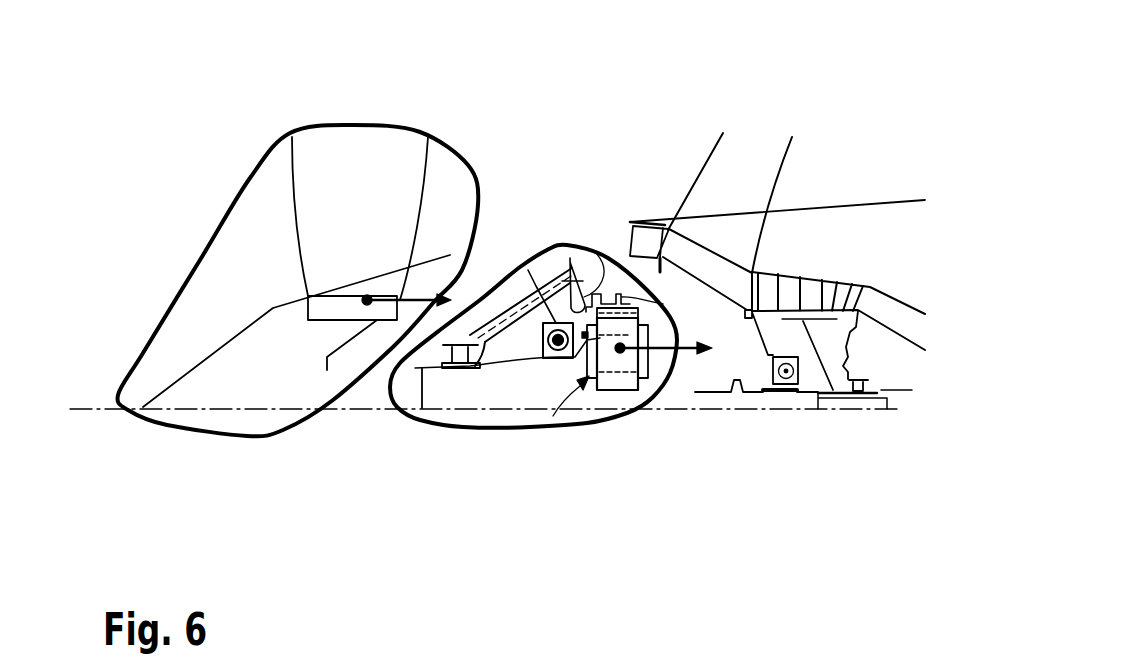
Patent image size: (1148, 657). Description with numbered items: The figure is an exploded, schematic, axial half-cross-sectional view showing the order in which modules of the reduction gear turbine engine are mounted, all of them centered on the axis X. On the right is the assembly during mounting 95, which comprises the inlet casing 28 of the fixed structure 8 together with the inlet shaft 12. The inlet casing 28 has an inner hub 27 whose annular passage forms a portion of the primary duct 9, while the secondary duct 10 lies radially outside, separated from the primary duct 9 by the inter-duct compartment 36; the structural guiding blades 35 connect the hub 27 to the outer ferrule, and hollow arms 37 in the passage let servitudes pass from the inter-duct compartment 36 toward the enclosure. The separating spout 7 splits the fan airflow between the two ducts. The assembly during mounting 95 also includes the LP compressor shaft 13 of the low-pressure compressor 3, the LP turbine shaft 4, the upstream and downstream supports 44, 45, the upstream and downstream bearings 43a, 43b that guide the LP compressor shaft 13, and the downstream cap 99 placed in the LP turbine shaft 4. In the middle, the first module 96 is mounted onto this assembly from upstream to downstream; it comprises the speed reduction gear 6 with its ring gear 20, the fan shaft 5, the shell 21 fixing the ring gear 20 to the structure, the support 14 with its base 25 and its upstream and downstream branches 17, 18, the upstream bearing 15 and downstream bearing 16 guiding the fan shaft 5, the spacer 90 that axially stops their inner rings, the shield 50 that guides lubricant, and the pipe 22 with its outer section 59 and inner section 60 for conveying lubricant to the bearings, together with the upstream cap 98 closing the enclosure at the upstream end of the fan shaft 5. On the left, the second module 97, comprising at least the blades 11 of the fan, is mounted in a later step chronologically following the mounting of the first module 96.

The low-pressure compressor 3 is at (866, 270).
The low-pressure turbine shaft 4 is at (888, 401).
The fan shaft 5 is at (500, 365).
The speed reduction gear 6 is at (552, 416).
The separating spout 7 is at (633, 222).
The fixed structure 8 is at (880, 180).
The primary duct 9 is at (663, 241).
The secondary duct 10 is at (819, 159).
The blades 11 is at (318, 172).
The inlet shaft 12 is at (694, 403).
The LP compressor shaft 13 is at (808, 393).
The support 14 is at (511, 262).
The upstream bearing 15 is at (453, 368).
The downstream bearing 16 is at (550, 358).
The upstream branch 17 is at (492, 326).
The downstream branch 18 is at (485, 372).
The ring gear 20 is at (663, 304).
The shell 21 is at (600, 266).
The pipe 22 is at (528, 268).
The base 25 is at (568, 292).
The inner hub 27 is at (770, 227).
The inlet casing 28 is at (771, 247).
The guiding blades 35 is at (730, 149).
The inter-duct compartment 36 is at (710, 265).
The hollow arms 37 is at (740, 283).
The upstream bearing 43a is at (778, 392).
The downstream bearing 43b is at (858, 392).
The upstream support 44 is at (768, 355).
The downstream support 45 is at (846, 353).
The shield 50 is at (546, 278).
The outer section 59 is at (571, 257).
The inner section 60 is at (489, 335).
The spacer 90 is at (518, 360).
The assembly during mounting 95 is at (851, 114).
The first module 96 is at (610, 418).
The second module 97 is at (194, 436).
The upstream cap 98 is at (413, 382).
The downstream cap 99 is at (818, 400).
The axis X is at (725, 412).